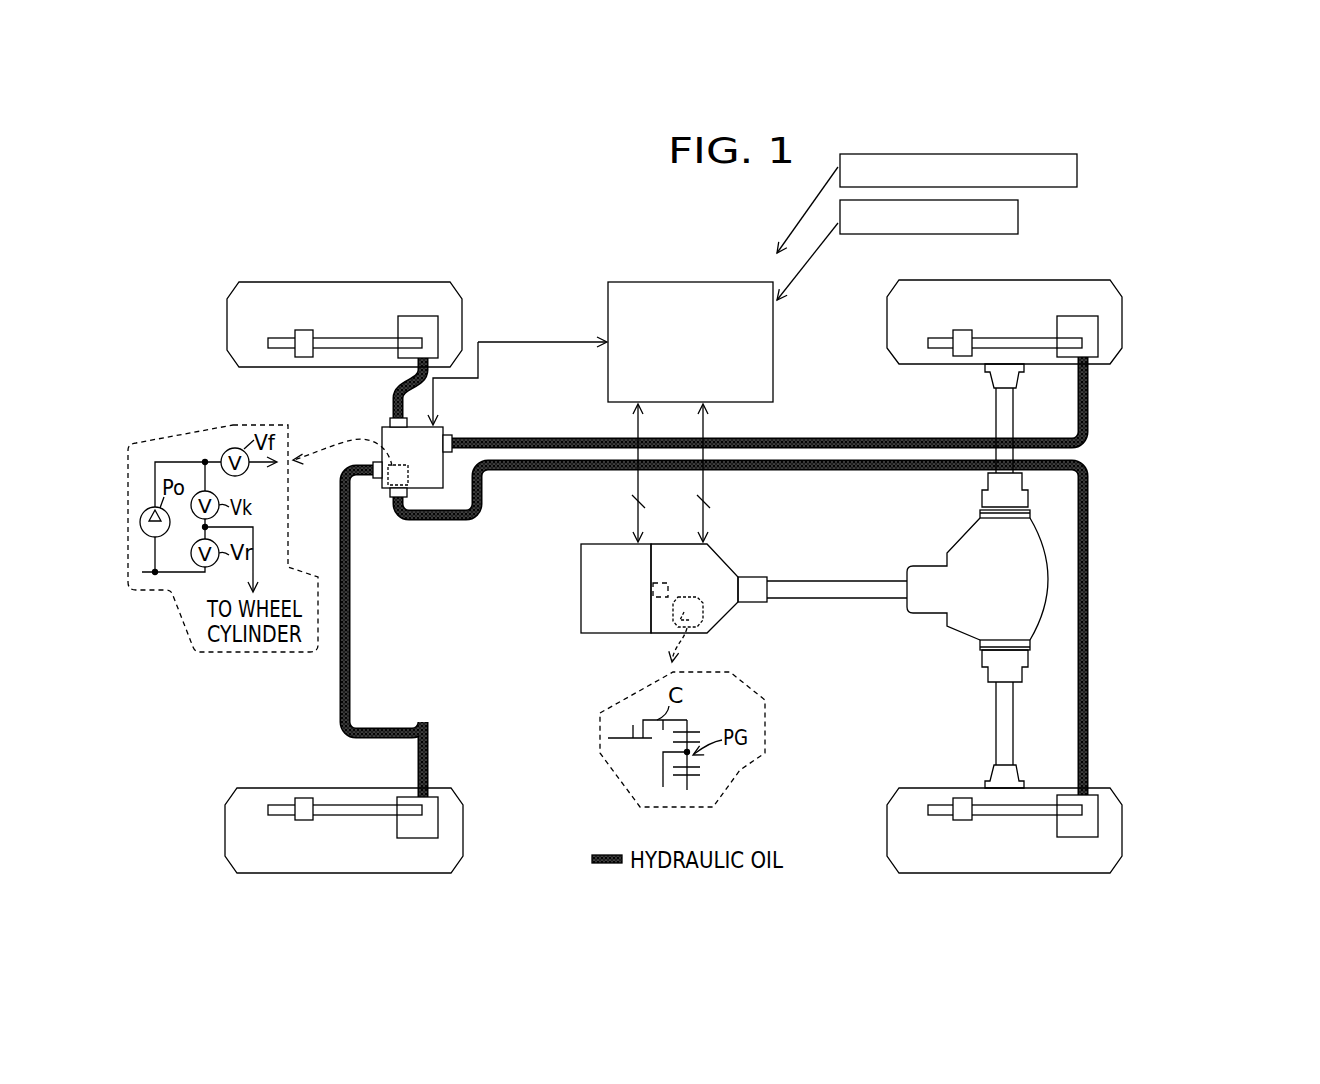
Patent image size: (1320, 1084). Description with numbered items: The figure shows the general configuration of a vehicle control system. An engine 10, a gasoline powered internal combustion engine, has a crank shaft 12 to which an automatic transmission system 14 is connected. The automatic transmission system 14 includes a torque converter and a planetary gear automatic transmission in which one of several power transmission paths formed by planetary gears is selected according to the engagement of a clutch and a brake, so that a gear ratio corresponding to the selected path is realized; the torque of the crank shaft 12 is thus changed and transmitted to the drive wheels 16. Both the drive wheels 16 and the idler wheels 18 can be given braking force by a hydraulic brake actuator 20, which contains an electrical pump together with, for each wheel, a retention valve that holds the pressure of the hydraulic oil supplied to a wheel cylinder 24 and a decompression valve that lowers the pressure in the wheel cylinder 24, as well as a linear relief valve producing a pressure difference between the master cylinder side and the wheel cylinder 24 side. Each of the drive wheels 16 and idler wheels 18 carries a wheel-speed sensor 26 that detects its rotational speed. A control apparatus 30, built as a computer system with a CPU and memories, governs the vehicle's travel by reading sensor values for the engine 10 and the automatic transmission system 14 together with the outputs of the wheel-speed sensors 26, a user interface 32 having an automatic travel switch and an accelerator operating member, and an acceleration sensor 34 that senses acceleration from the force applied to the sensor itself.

The engine 10 is at (581, 611).
The crank shaft 12 is at (661, 583).
The automatic transmission system 14 is at (722, 557).
The drive wheels 16 is at (887, 330).
The idler wheels 18 is at (227, 329).
The brake actuator 20 is at (443, 430).
The wheel cylinder 24 is at (422, 316).
The wheel-speed sensor 26 is at (302, 329).
The control apparatus 30 is at (773, 372).
The user interface 32 is at (1018, 218).
The acceleration sensor 34 is at (1077, 171).